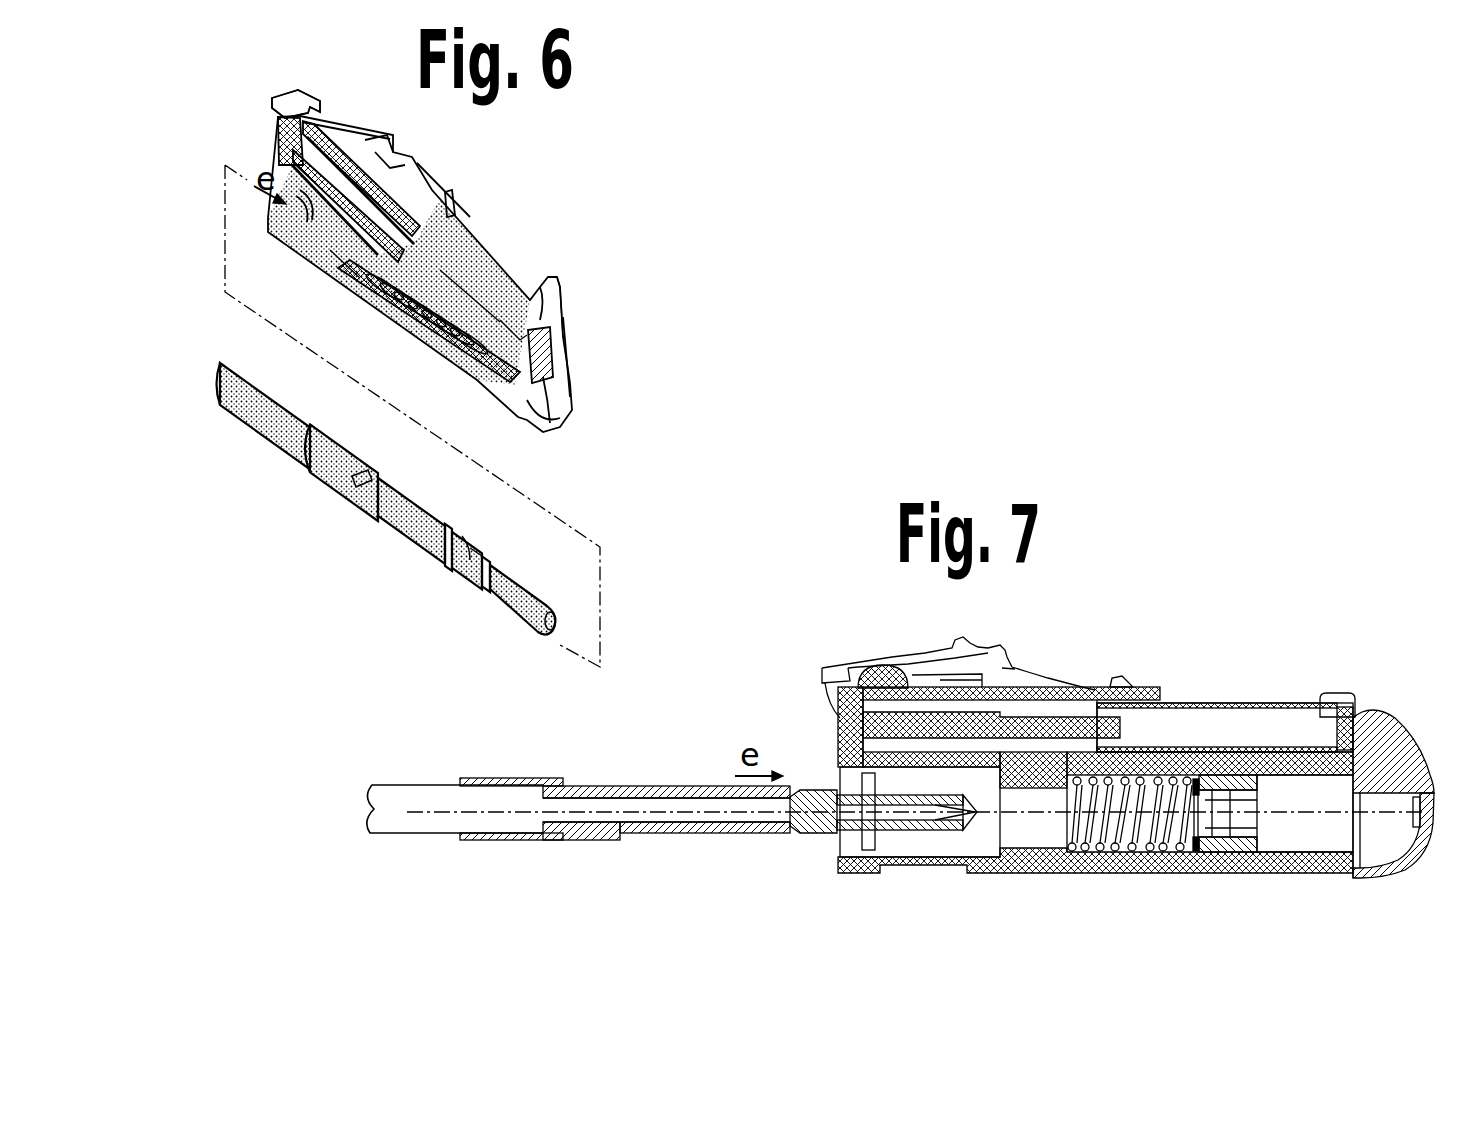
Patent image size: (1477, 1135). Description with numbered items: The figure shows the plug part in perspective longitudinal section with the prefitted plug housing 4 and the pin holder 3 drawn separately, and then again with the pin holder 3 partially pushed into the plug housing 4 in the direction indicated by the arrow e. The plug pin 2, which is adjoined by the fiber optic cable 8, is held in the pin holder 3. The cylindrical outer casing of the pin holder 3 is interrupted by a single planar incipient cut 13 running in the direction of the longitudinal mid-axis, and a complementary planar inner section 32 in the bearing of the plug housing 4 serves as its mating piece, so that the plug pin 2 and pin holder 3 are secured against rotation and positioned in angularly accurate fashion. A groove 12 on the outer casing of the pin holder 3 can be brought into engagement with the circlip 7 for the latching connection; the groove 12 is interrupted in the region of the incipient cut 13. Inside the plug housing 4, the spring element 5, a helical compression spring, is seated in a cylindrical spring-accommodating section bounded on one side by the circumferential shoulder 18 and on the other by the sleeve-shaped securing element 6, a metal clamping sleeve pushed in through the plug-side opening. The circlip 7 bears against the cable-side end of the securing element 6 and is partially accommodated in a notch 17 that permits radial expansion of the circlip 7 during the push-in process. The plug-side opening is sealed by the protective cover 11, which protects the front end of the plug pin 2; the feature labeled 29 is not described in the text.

In FIG. 6, the plug pin 2 is at (513, 618).
In FIG. 7, the plug pin 2 is at (840, 795).
In FIG. 6, the pin holder 3 is at (348, 522).
In FIG. 7, the pin holder 3 is at (601, 781).
In FIG. 6, the plug housing 4 is at (545, 200).
In FIG. 7, the plug housing 4 is at (1149, 656).
In FIG. 6, the spring element 5 is at (440, 267).
In FIG. 7, the spring element 5 is at (1152, 807).
In FIG. 6, the securing element 6 is at (523, 303).
In FIG. 7, the securing element 6 is at (1237, 847).
In FIG. 6, the circlip 7 is at (430, 290).
In FIG. 7, the circlip 7 is at (1197, 850).
In FIG. 6, the fiber optic cable 8 is at (240, 418).
In FIG. 7, the fiber optic cable 8 is at (390, 830).
In FIG. 6, the protective cover 11 is at (567, 388).
In FIG. 7, the protective cover 11 is at (1413, 767).
In FIG. 6, the groove 12 is at (442, 571).
In FIG. 7, the groove 12 is at (770, 838).
In FIG. 6, the planar incipient cut 13 is at (388, 487).
In FIG. 7, the planar incipient cut 13 is at (656, 785).
In FIG. 7, the notch 17 is at (1197, 787).
In FIG. 6, the shoulder 18 is at (357, 300).
In FIG. 7, the shoulder 18 is at (1063, 787).
In FIG. 7, the stop 29 is at (1316, 847).
In FIG. 6, the planar inner section 32 is at (332, 252).
In FIG. 7, the planar inner section 32 is at (1025, 800).